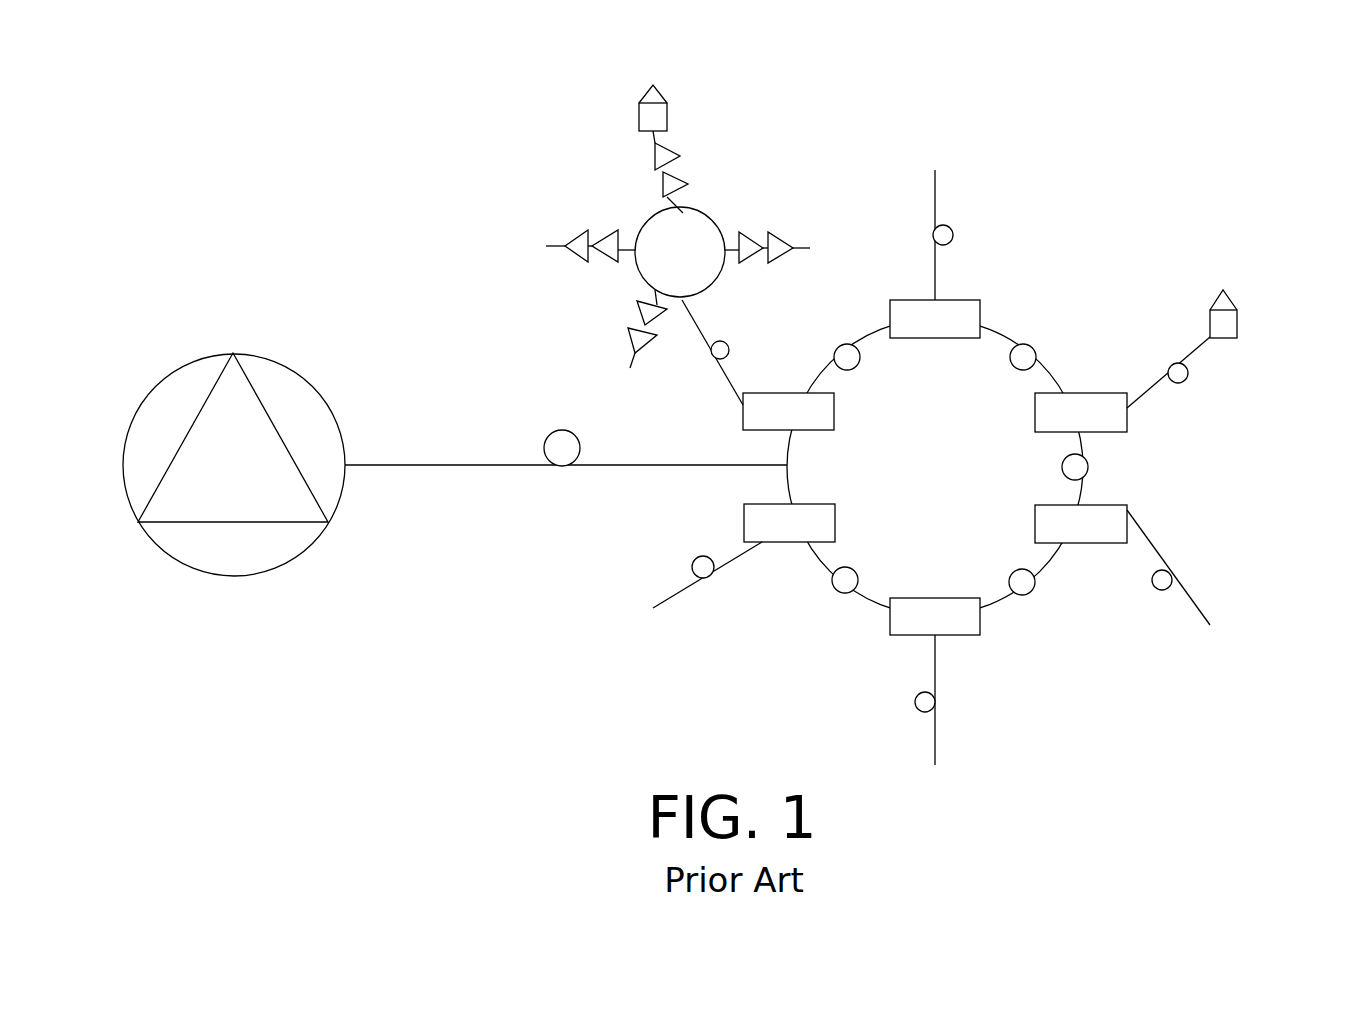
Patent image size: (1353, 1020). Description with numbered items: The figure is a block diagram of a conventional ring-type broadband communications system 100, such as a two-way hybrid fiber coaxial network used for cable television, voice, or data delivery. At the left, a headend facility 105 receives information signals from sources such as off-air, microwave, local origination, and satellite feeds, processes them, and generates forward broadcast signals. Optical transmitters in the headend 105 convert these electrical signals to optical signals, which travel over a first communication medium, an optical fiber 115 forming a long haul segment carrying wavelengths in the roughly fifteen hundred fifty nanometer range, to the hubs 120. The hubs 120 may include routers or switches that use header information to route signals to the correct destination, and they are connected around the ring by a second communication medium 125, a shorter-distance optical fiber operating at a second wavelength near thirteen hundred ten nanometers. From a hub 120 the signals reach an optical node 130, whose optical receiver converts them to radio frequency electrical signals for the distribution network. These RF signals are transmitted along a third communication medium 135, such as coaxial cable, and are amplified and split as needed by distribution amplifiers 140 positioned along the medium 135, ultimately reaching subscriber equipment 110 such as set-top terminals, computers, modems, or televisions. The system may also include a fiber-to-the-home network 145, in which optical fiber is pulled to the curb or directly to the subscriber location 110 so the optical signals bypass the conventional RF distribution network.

The cable television network 100 is at (1177, 748).
The headend facility 105 is at (233, 578).
The subscriber equipment 110 is at (690, 102).
The optical fiber 115 is at (452, 467).
The hub 120 is at (960, 300).
The second communication medium 125 is at (1053, 362).
The optical node 130 is at (643, 282).
The third communication medium 135 is at (566, 243).
The distribution amplifier 140 is at (681, 157).
The fiber-to-the-home network 145 is at (1176, 422).